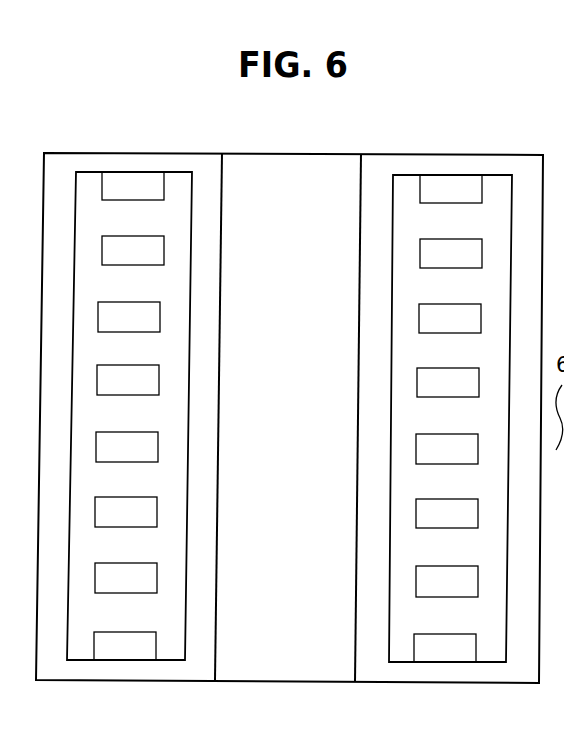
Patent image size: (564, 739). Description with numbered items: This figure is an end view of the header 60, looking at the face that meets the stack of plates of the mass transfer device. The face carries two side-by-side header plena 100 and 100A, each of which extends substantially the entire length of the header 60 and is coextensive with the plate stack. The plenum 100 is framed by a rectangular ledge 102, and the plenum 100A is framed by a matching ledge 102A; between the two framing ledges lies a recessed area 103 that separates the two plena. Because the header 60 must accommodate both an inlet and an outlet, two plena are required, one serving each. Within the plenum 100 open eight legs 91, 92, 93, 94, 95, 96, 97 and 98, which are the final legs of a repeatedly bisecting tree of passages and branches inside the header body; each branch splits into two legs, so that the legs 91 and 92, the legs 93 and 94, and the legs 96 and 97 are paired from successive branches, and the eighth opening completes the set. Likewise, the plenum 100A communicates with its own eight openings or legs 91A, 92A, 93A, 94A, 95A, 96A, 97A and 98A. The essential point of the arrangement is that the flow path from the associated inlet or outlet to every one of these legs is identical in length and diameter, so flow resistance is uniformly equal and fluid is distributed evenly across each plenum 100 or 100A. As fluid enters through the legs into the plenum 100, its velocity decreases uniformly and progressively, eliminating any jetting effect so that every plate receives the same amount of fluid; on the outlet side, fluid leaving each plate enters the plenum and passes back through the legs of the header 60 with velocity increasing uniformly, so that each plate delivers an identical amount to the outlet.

The header 60 is at (311, 103).
The leg 91 is at (439, 200).
The leg 92 is at (439, 265).
The leg 93 is at (438, 330).
The leg 94 is at (436, 394).
The leg 95 is at (435, 461).
The leg 96 is at (435, 525).
The leg 97 is at (435, 594).
The leg 98 is at (433, 659).
The leg 91A is at (115, 197).
The leg 92A is at (115, 262).
The leg 93A is at (111, 329).
The leg 94A is at (110, 392).
The leg 95A is at (109, 459).
The leg 96A is at (108, 524).
The leg 97A is at (108, 590).
The leg 98A is at (107, 657).
The header plenum 100 is at (499, 638).
The header plenum 100A is at (172, 638).
The rectangular ledge 102 is at (524, 180).
The framing ledge 102A is at (66, 170).
The recessed area 103 is at (302, 428).